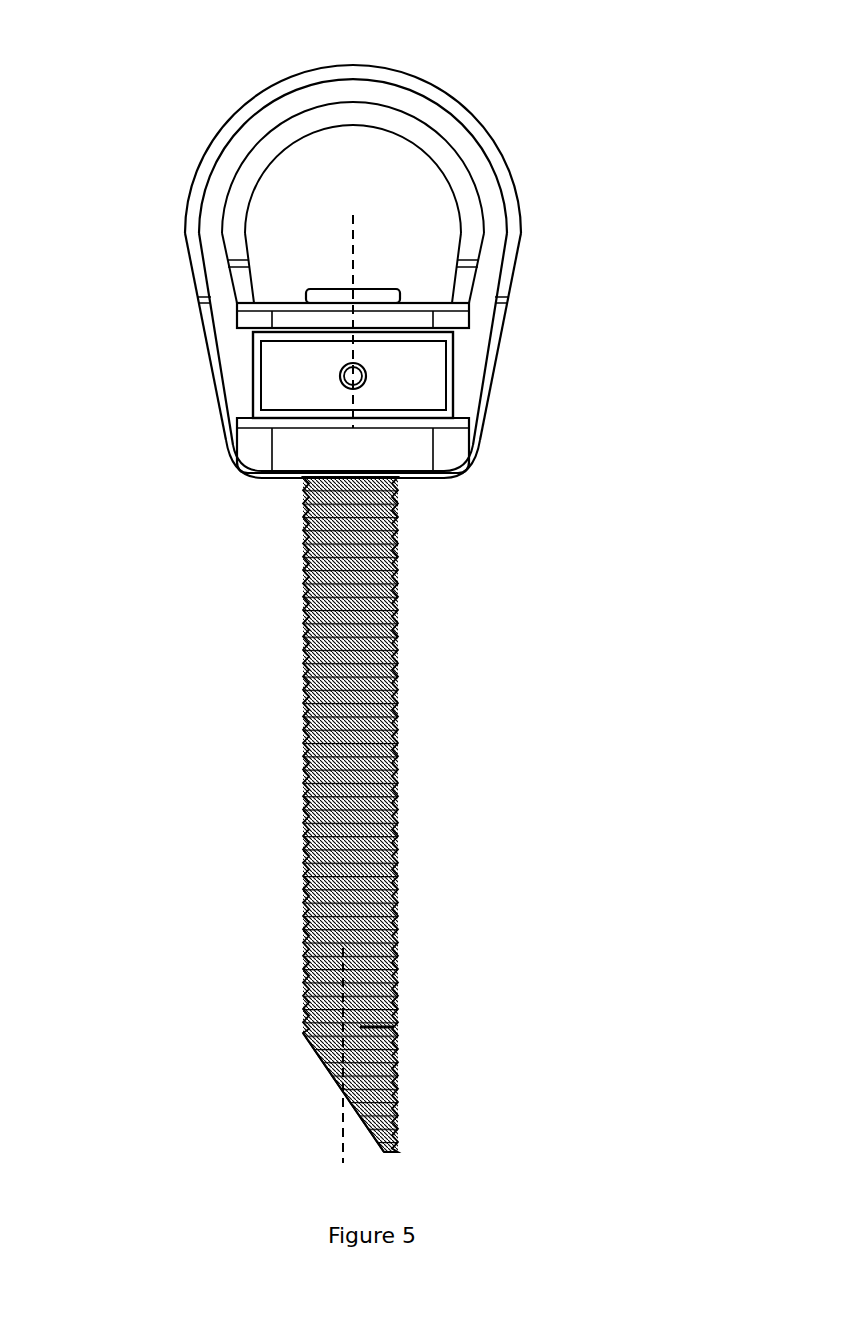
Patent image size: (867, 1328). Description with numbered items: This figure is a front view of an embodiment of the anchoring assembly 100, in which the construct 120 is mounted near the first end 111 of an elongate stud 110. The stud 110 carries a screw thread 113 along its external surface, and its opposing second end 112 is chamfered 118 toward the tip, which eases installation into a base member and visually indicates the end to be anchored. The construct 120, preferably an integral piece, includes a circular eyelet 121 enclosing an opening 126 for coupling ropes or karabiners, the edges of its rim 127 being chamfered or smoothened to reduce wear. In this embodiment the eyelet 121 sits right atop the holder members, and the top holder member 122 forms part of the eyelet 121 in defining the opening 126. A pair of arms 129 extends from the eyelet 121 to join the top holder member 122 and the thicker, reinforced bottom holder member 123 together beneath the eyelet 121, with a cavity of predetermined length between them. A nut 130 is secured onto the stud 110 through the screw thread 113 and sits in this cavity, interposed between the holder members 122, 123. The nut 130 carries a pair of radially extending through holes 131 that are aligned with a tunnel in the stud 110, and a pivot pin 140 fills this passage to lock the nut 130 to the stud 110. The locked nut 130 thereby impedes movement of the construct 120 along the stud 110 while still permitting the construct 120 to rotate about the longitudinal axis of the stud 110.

The anchoring assembly 100 is at (537, 107).
The stud 110 is at (395, 758).
The first end 111 is at (388, 303).
The second end 112 is at (360, 1027).
The screw thread 113 is at (397, 632).
The chamfered tip 118 is at (321, 1053).
The construct 120 is at (482, 287).
The eyelet 121 is at (432, 138).
The top holder member 122 is at (334, 308).
The bottom holder member 123 is at (392, 452).
The opening 126 is at (320, 172).
The rim 127 is at (230, 203).
The arms 129 is at (227, 358).
The nut 130 is at (407, 372).
The through holes 131 is at (345, 383).
The pivot pin 140 is at (345, 368).